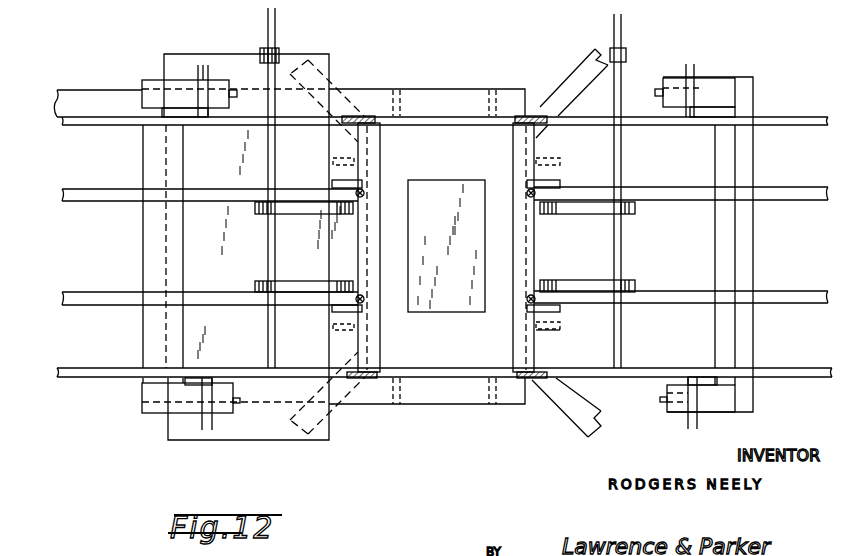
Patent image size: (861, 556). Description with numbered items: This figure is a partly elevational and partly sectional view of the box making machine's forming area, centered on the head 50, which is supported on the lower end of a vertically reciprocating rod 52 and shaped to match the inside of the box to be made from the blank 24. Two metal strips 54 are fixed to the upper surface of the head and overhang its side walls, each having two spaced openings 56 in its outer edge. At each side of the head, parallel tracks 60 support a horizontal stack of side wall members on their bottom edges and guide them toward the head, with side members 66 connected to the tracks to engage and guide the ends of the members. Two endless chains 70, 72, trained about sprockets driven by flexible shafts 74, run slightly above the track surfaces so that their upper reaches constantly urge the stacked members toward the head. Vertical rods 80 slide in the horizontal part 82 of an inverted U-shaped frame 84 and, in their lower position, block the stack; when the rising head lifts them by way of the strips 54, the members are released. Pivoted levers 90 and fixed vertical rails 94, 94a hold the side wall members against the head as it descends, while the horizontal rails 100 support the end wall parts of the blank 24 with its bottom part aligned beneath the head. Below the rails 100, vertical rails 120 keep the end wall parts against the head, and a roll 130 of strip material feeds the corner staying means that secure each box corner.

The blank 24 is at (329, 58).
The head 50 is at (446, 365).
The rod 52 is at (438, 255).
The metal strips 54 is at (336, 147).
The openings 56 is at (362, 178).
The tracks 60 is at (102, 190).
The side members 66 is at (114, 125).
The endless chain 70 is at (301, 214).
The endless chain 72 is at (303, 282).
The flexible shafts 74 is at (266, 22).
The vertical rods 80 is at (364, 195).
The horizontal part 82 is at (552, 332).
The frame 84 is at (358, 116).
The levers 90 is at (338, 180).
The vertical rail 94 is at (333, 327).
The vertical rail 94a is at (560, 161).
The rails 100 is at (462, 88).
The vertical rails 120 is at (398, 88).
The roll 130 is at (596, 59).